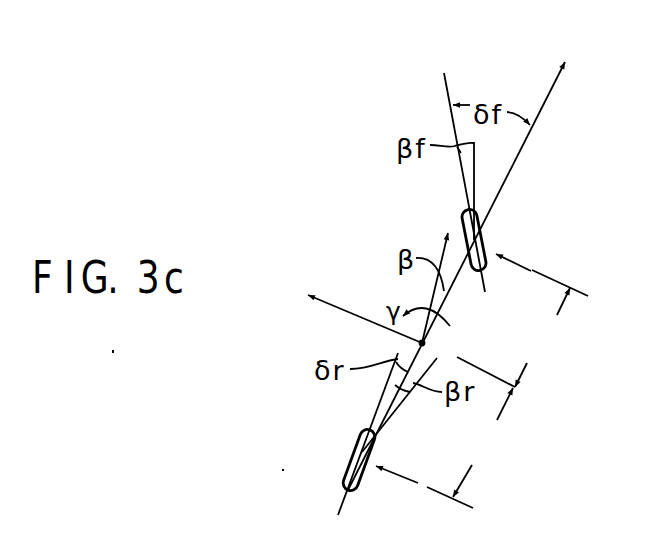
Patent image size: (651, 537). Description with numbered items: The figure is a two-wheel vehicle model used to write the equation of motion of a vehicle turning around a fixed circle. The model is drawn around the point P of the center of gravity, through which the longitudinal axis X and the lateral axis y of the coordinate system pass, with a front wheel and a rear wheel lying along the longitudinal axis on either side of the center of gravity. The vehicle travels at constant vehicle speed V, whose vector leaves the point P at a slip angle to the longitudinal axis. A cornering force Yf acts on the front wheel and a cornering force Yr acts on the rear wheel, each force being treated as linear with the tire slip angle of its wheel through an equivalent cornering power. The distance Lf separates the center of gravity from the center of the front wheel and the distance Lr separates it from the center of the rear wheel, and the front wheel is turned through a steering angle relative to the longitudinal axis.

The ground-fixed coordinate axis X is at (459, 259).
The vehicle-fixed coordinate axis y is at (356, 310).
The vehicle speed V is at (436, 272).
The point of center of gravity P is at (436, 347).
The cornering force of front wheel Yf is at (515, 242).
The cornering force of rear wheel Yr is at (401, 463).
The distance from center of gravity to front wheel center Lf is at (542, 337).
The distance from center of gravity to rear wheel center Lr is at (483, 442).